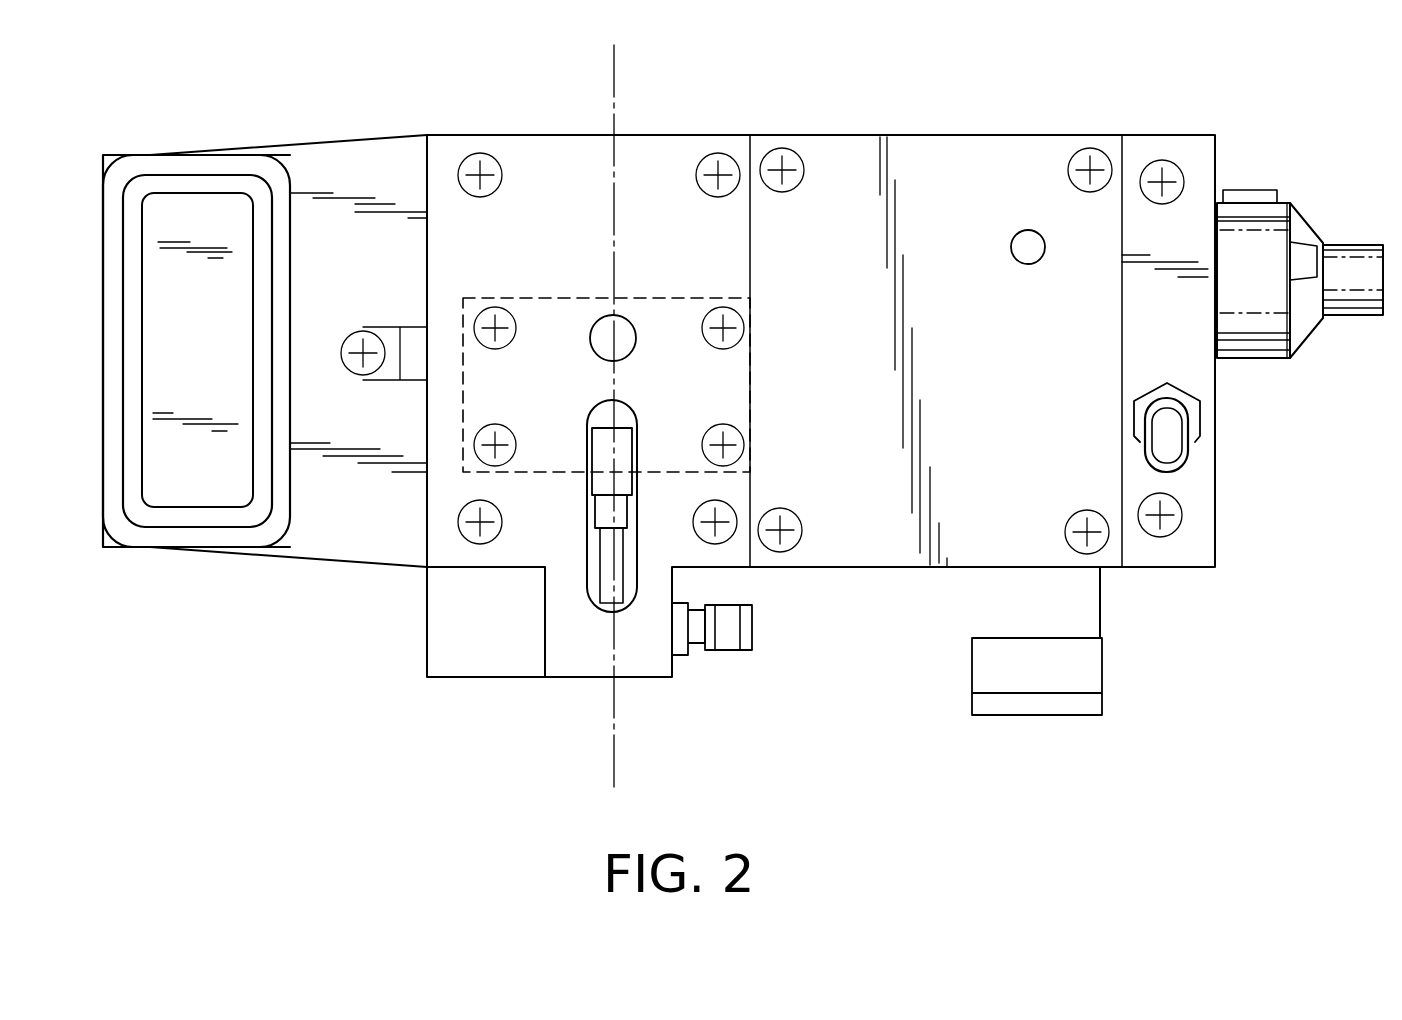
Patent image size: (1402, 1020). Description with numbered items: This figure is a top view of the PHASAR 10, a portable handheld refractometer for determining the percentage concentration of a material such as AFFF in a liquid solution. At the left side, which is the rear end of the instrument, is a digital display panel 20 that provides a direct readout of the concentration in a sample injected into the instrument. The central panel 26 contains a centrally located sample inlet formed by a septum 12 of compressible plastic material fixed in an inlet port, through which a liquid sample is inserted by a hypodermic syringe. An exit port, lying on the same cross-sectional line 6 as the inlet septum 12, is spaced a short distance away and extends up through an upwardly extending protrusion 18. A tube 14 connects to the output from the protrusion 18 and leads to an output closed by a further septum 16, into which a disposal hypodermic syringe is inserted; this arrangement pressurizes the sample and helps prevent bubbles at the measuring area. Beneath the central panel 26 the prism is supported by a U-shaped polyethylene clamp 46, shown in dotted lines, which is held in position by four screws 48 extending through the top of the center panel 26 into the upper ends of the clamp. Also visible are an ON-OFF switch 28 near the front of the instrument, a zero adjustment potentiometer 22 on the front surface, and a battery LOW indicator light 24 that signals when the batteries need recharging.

The enlarged cross-sectional view section line 6 is at (630, 762).
The PHASAR 10 is at (993, 128).
The septum 12 is at (623, 330).
The tube 14 is at (612, 612).
The further septum 16 is at (727, 647).
The upwardly extending protrusion 18 is at (637, 447).
The digital display panel 20 is at (195, 490).
The zero adjustment potentiometer 22 is at (1303, 217).
The battery LOW indicator light 24 is at (1027, 250).
The central panel 26 is at (750, 242).
The ON-OFF switch 28 is at (1186, 458).
The U-shaped polyethylene clamp 46 is at (547, 297).
The screws 48 is at (723, 422).